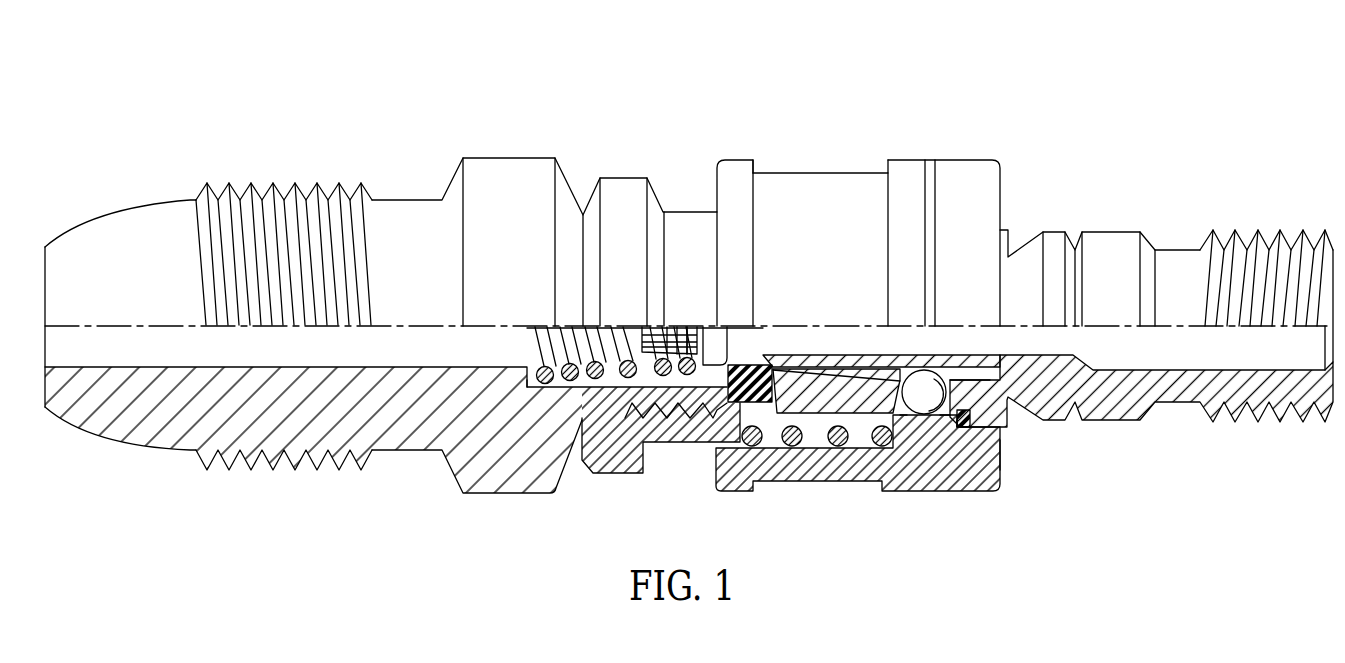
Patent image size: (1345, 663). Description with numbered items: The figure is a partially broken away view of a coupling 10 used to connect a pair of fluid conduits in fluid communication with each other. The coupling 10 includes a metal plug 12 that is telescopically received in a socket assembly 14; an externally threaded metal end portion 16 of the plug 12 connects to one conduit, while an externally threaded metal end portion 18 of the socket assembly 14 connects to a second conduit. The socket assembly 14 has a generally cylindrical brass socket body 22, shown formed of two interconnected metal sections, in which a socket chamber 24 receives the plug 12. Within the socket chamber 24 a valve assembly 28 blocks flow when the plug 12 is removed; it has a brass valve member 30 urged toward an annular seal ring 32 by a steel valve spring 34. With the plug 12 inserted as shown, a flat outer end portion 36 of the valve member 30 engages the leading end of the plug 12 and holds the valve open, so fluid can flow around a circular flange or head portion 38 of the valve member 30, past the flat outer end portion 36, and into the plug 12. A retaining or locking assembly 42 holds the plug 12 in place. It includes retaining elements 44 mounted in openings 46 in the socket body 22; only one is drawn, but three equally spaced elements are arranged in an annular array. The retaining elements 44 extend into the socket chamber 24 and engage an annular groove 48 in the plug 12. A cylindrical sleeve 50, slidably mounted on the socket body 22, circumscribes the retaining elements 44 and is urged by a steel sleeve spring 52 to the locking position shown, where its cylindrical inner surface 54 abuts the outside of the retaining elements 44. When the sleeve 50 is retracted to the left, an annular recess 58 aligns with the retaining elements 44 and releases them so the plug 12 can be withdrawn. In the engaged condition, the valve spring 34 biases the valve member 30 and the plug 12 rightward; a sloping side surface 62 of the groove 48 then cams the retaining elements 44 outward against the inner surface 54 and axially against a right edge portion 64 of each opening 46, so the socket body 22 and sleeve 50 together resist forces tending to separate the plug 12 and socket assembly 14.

The coupling 10 is at (947, 102).
The plug 12 is at (1244, 211).
The socket assembly 14 is at (552, 131).
The externally threaded metal end portion 16 is at (1262, 418).
The externally threaded metal end portion 18 is at (296, 183).
The socket body 22 is at (533, 470).
The socket chamber 24 is at (712, 378).
The valve assembly 28 is at (676, 320).
The valve member 30 is at (649, 331).
The annular seal ring 32 is at (710, 388).
The valve spring 34 is at (540, 355).
The flat outer end portion 36 is at (772, 353).
The circular flange or head portion 38 is at (688, 373).
The retaining or locking assembly 42 is at (1001, 157).
The retaining elements 44 is at (927, 408).
The openings 46 is at (922, 408).
The annular groove 48 is at (942, 370).
The sleeve 50 is at (987, 468).
The sleeve spring 52 is at (792, 447).
The cylindrical inner surface 54 is at (960, 417).
The annular recess 58 is at (992, 453).
The sloping side surface 62 is at (921, 371).
The edge portion 64 is at (962, 366).